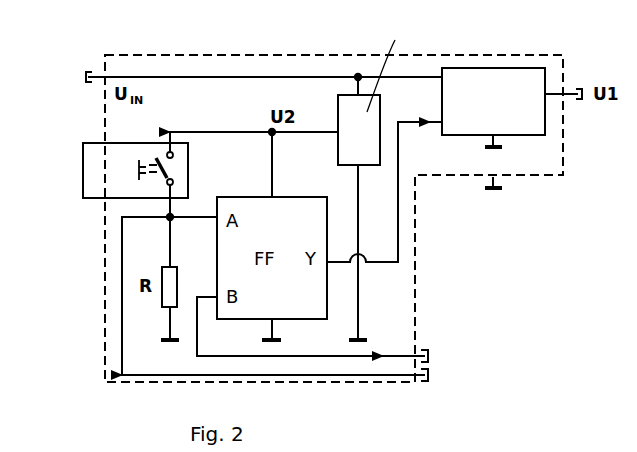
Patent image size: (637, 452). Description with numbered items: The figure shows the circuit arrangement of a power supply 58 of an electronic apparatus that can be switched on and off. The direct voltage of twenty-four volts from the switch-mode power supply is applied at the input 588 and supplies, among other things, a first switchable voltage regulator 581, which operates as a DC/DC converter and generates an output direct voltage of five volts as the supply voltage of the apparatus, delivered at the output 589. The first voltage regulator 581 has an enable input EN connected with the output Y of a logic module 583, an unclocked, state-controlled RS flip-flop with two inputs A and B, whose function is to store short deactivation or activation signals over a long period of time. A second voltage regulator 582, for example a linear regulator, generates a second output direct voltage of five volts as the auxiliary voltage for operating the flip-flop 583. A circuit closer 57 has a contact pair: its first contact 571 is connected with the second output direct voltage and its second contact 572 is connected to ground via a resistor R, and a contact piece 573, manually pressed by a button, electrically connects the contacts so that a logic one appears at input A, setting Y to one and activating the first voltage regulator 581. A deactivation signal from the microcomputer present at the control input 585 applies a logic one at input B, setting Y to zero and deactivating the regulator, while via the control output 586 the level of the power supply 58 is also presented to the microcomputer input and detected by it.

The power supply 58 is at (486, 279).
The input 588 is at (86, 75).
The output 589 is at (581, 90).
The first switchable voltage regulator 581 is at (537, 117).
The second voltage regulator 582 is at (370, 148).
The circuit closer 57 is at (105, 164).
The first contact 571 is at (167, 151).
The second contact 572 is at (168, 186).
The contact piece 573 is at (156, 158).
The logic module 583 is at (223, 241).
The control input 585 is at (431, 350).
The control output 586 is at (430, 379).